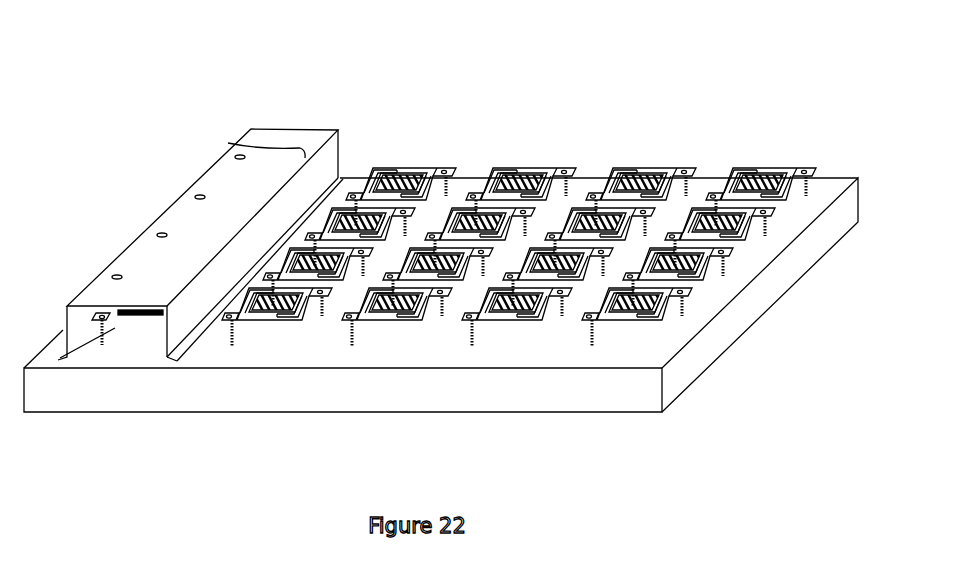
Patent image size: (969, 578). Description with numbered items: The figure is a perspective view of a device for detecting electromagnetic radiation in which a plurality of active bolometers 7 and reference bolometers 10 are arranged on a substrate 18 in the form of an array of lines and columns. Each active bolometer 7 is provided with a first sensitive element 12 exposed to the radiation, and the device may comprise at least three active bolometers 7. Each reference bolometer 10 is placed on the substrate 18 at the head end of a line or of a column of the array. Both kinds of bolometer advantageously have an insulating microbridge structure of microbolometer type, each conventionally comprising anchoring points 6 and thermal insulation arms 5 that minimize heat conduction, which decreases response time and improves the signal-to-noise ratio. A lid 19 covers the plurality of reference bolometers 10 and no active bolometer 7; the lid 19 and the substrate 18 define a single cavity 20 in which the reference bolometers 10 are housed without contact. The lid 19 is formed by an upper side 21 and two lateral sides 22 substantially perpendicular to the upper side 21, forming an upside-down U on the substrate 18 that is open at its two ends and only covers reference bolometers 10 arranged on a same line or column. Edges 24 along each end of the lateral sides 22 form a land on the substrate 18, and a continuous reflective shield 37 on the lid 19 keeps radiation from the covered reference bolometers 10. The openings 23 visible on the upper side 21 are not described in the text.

The thermal insulation arms 5 is at (639, 150).
The anchoring points 6 is at (698, 146).
The active bolometer 7 is at (642, 133).
The reference bolometer 10 is at (242, 267).
The first sensitive element 12 is at (761, 141).
The substrate 18 is at (510, 388).
The lid 19 is at (352, 130).
The cavity 20 is at (115, 328).
The upper side 21 is at (265, 147).
The lateral sides 22 is at (519, 210).
The holes in cap 23 is at (200, 197).
The edges 24 is at (180, 358).
The continuous reflective shield 37 is at (308, 135).